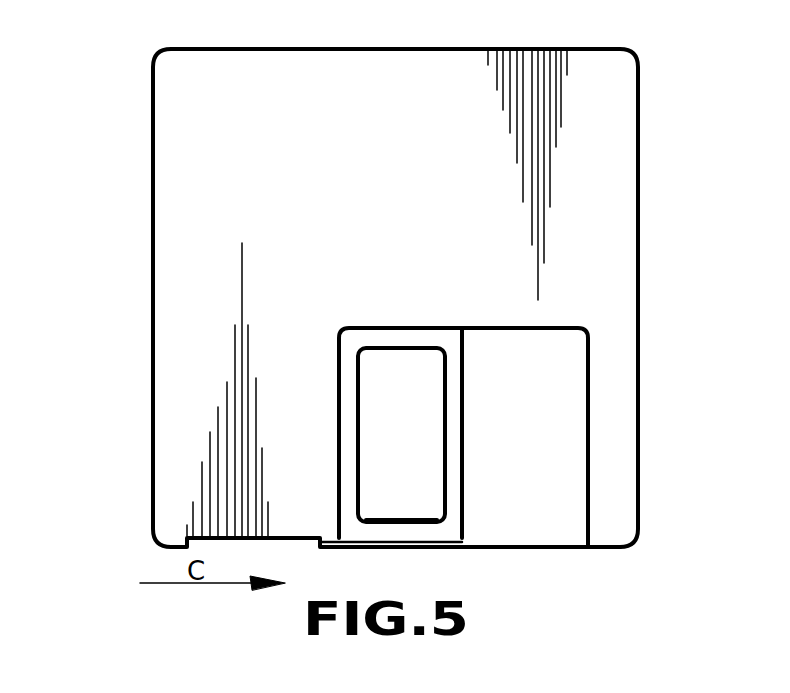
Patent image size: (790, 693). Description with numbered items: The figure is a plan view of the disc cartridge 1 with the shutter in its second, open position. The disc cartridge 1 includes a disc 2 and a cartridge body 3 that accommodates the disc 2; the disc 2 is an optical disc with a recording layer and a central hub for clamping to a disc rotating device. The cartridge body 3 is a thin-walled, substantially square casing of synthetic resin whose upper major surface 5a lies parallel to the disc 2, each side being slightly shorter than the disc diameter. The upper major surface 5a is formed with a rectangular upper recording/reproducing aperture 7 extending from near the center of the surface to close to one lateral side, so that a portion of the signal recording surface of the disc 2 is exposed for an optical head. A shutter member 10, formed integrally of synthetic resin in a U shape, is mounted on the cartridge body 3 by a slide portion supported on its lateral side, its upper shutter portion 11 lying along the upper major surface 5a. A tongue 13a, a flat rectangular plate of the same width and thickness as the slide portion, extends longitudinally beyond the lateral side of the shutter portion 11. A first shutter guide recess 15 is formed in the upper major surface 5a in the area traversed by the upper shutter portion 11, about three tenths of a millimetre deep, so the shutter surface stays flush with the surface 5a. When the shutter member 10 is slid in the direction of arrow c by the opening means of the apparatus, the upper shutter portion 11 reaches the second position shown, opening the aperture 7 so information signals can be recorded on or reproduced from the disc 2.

The disc cartridge 1 is at (643, 85).
The cartridge body 3 is at (639, 154).
The upper major surface 5a is at (465, 64).
The upper recording/reproducing aperture 7 is at (358, 375).
The upper shutter portion 11 is at (565, 462).
The first shutter guide recess 15 is at (588, 408).
The tongue 13a is at (372, 540).
The disc 2 is at (425, 512).
The shutter member 10 is at (568, 548).